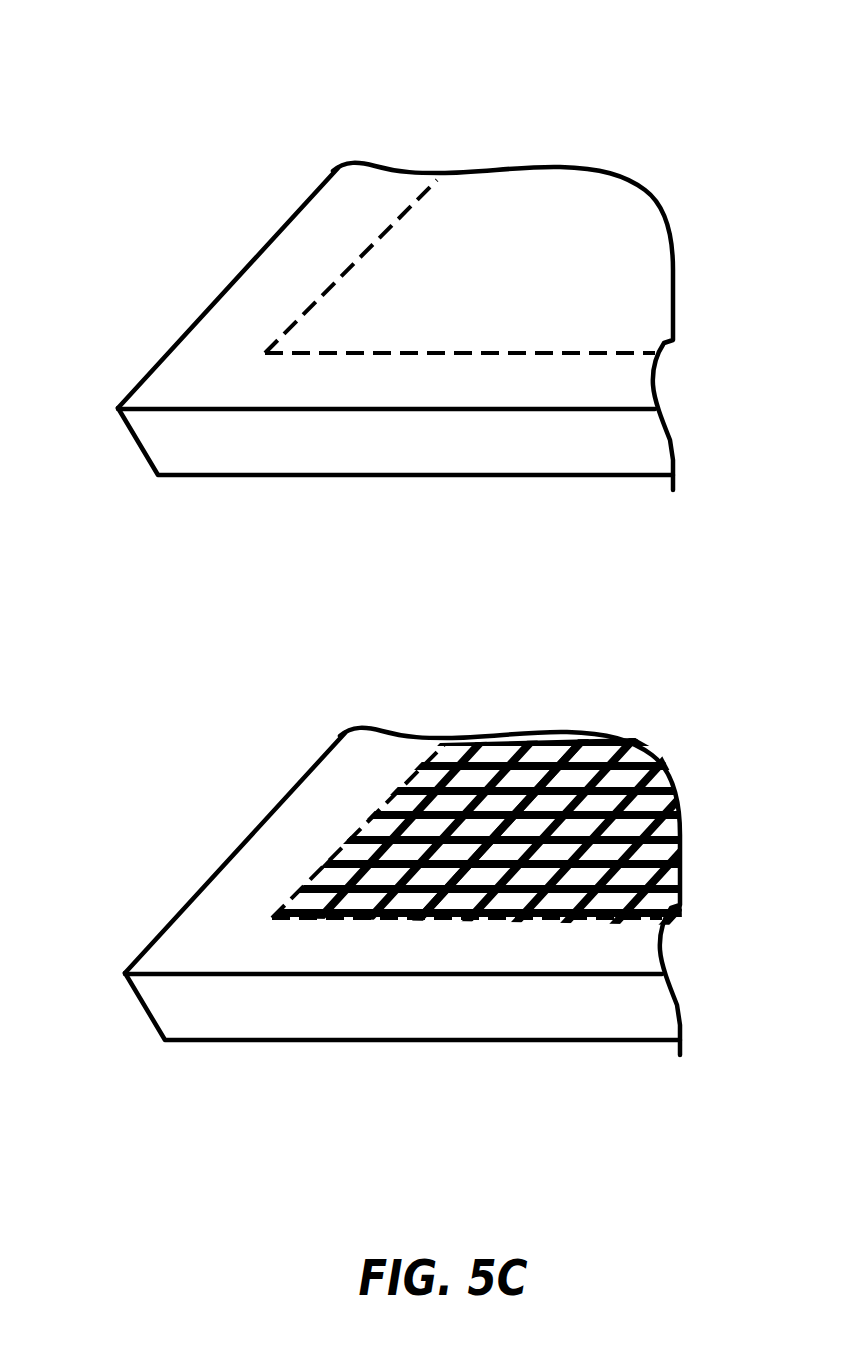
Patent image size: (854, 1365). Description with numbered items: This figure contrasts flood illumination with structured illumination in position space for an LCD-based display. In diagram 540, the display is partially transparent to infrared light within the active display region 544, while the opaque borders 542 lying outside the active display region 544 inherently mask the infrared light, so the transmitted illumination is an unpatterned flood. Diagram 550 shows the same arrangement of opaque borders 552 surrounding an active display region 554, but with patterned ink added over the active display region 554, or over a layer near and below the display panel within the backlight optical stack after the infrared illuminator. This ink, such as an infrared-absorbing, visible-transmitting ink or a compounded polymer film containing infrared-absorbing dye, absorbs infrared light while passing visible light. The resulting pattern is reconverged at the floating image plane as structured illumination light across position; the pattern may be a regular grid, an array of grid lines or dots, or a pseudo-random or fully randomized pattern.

The diagram 540 is at (391, 248).
The opaque borders 542 is at (305, 292).
The active display region 544 is at (583, 222).
The diagram 550 is at (455, 864).
The opaque borders 552 is at (320, 850).
The active display region 554 is at (525, 806).